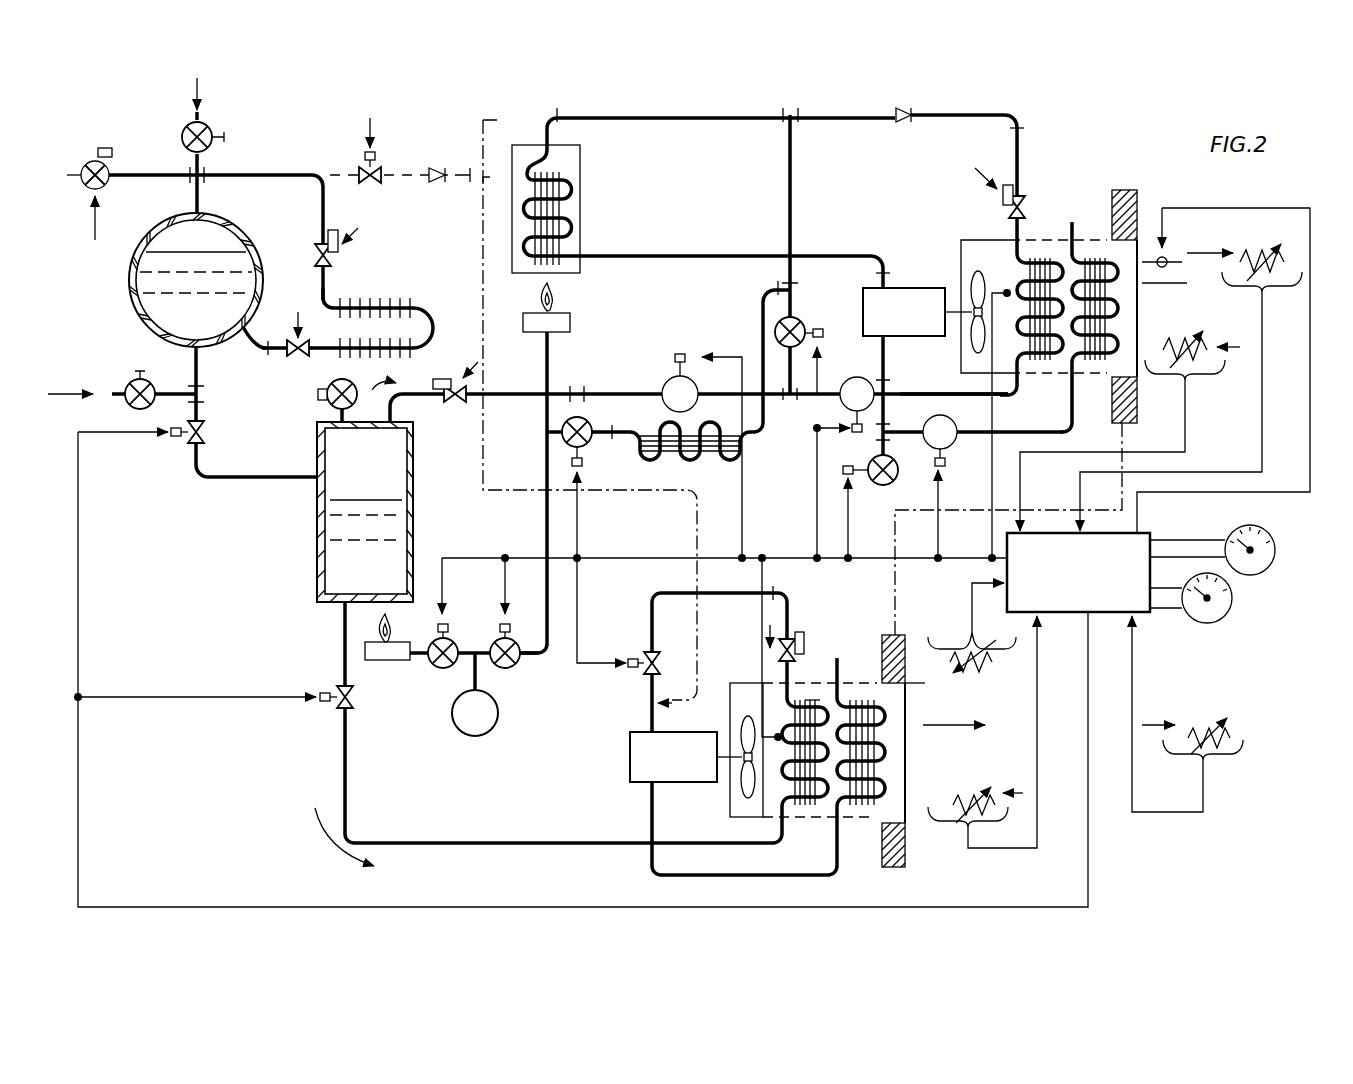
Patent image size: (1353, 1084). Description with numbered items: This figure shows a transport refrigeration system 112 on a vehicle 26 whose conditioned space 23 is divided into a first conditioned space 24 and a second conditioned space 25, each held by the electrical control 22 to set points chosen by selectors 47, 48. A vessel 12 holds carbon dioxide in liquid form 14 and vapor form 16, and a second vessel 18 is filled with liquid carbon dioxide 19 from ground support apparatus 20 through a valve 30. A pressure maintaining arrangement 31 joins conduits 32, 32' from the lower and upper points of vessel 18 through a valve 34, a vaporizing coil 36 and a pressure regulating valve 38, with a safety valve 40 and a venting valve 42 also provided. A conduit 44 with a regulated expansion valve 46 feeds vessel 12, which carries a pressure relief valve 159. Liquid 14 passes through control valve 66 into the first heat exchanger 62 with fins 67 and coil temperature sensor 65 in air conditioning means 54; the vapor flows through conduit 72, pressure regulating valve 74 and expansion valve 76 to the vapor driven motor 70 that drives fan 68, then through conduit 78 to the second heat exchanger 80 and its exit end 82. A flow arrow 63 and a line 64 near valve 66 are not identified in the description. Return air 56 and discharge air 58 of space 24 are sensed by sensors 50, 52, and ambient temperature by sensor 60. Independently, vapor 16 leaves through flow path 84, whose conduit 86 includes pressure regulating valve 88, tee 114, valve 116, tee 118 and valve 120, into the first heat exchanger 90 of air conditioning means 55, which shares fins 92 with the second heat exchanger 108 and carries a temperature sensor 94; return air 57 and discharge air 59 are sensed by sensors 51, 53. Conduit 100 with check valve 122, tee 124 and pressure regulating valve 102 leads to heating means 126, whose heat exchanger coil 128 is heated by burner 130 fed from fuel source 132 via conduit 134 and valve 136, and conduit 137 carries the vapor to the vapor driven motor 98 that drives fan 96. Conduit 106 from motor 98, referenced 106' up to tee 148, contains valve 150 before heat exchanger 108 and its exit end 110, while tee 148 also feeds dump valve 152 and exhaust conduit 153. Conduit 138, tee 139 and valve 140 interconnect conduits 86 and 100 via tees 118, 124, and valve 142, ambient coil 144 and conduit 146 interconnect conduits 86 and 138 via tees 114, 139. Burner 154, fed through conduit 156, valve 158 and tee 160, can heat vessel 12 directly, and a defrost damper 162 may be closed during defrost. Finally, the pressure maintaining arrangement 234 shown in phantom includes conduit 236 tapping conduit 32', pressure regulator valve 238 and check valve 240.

The vessel 12 is at (353, 512).
The liquid carbon dioxide 14 is at (340, 488).
The vapor carbon dioxide 16 is at (333, 449).
The second vessel 18 is at (150, 238).
The liquid carbon dioxide 19 is at (208, 250).
The ground support apparatus 20 is at (72, 394).
The electrical control 22 is at (1150, 534).
The conditioned space 23 is at (940, 610).
The first conditioned space 24 is at (965, 766).
The second conditioned space 25 is at (1177, 318).
The vehicle 26 is at (1135, 192).
The valve 30 is at (128, 383).
The pressure maintaining arrangement 31 is at (376, 310).
The conduit 32 is at (242, 357).
The conduit 32' is at (216, 184).
The valve 34 is at (296, 357).
The vaporizing coil 36 is at (395, 308).
The pressure regulating valve 38 is at (314, 260).
The pressure reading safety valve 40 is at (103, 148).
The venting valve 42 is at (181, 128).
The conduit 44 is at (204, 402).
The regulated expansion valve 46 is at (206, 437).
The set point temperature selector 47 is at (1276, 549).
The set point temperature selector 48 is at (1232, 600).
The return air temperature sensor 50 is at (953, 820).
The return air temperature sensor 51 is at (1198, 381).
The discharge air temperature sensor 52 is at (1232, 720).
The discharge air temperature sensor 53 is at (1191, 374).
The air conditioning means 54 is at (730, 692).
The air conditioning means 55 is at (969, 240).
The return air 56 is at (1015, 791).
The return air 57 is at (1238, 345).
The discharge air 58 is at (946, 724).
The discharge air 59 is at (1203, 252).
The ambient air temperature sensor 60 is at (988, 668).
The first heat exchanger 62 is at (780, 826).
The flow direction 63 is at (327, 852).
The line 64 is at (348, 758).
The coil temperature sensor 65 is at (777, 734).
The first active cryogen control valve 66 is at (336, 690).
The fins 67 is at (813, 700).
The fan 68 is at (778, 808).
The vapor driven motor 70 is at (708, 782).
The conduit 72 is at (792, 606).
The pressure regulating valve 74 is at (798, 640).
The expansion valve 76 is at (660, 658).
The conduit 78 is at (650, 818).
The second heat exchanger 80 is at (838, 806).
The exit end 82 is at (843, 678).
The second active cryogen fluid flow path 84 is at (375, 372).
The conduit 86 is at (522, 392).
The pressure regulating valve 88 is at (448, 402).
The first heat exchanger 90 is at (1020, 366).
The fins 92 is at (1072, 368).
The temperature sensor 94 is at (1005, 291).
The fan 96 is at (968, 346).
The vapor driven motor 98 is at (903, 288).
The conduit 100 is at (986, 118).
The pressure regulating valve 102 is at (1023, 201).
The conduit 106 is at (973, 485).
The conduit 106' is at (857, 387).
The second heat exchanger 108 is at (1040, 262).
The exit end 110 is at (1073, 222).
The refrigeration system 112 is at (477, 118).
The tee 114 is at (580, 386).
The valve 116 is at (667, 383).
The tee 118 is at (790, 406).
The valve 120 is at (884, 406).
The check valve 122 is at (898, 107).
The tee 124 is at (784, 112).
The heating means 126 is at (571, 200).
The heat exchanger coil 128 is at (574, 234).
The burner 130 is at (523, 322).
The fuel source 132 is at (468, 736).
The conduit 134 is at (543, 452).
The valve 136 is at (516, 666).
The conduit 137 is at (886, 262).
The conduit 138 is at (794, 194).
The tee 139 is at (796, 290).
The valve 140 is at (803, 324).
The valve 142 is at (588, 447).
The ambient temperature coil 144 is at (668, 463).
The conduit 146 is at (762, 340).
The tee 148 is at (845, 432).
The valve 150 is at (940, 402).
The dump valve 152 is at (897, 473).
The exhaust conduit 153 is at (883, 488).
The burner 154 is at (372, 662).
The conduit 156 is at (428, 655).
The valve 158 is at (443, 670).
The pressure relief valve 159 is at (318, 400).
The tee 160 is at (500, 629).
The defrost damper 162 is at (1167, 258).
The pressure maintaining arrangement 234 is at (352, 152).
The conduit 236 is at (463, 185).
The pressure regulator valve 238 is at (364, 183).
The check valve 240 is at (433, 170).